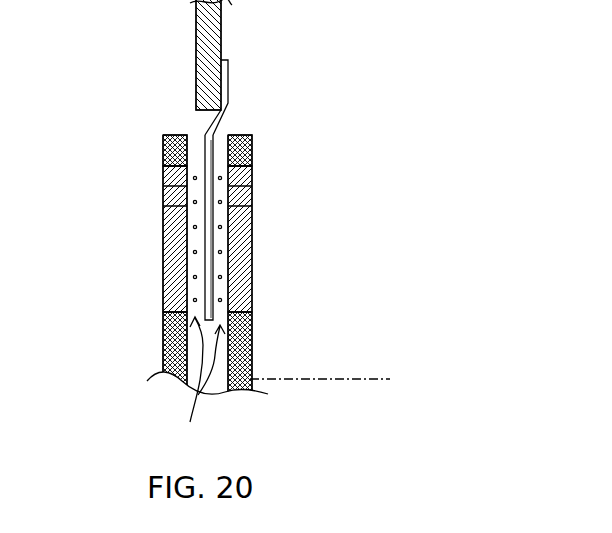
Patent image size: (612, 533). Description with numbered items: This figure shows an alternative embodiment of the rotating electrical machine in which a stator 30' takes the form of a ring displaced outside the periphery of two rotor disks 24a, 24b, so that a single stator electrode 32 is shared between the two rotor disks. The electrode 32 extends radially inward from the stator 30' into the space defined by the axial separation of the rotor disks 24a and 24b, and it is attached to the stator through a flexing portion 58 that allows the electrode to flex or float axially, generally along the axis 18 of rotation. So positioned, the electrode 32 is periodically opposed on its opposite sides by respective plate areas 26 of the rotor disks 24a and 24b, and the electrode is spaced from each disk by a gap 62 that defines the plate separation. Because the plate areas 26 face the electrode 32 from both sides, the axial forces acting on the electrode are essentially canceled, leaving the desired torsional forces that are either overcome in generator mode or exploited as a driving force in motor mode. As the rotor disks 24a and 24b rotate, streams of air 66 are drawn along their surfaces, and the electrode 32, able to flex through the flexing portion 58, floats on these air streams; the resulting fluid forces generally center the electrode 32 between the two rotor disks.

The stator 30' is at (243, 55).
The flexing portion 58 is at (229, 112).
The rotor disk 24a is at (175, 135).
The rotor disk 24b is at (245, 135).
The streams of air 66 is at (194, 202).
The plate areas 26 is at (208, 246).
The electrode 32 is at (214, 266).
The gap 62 is at (202, 383).
The axis 18 is at (347, 378).